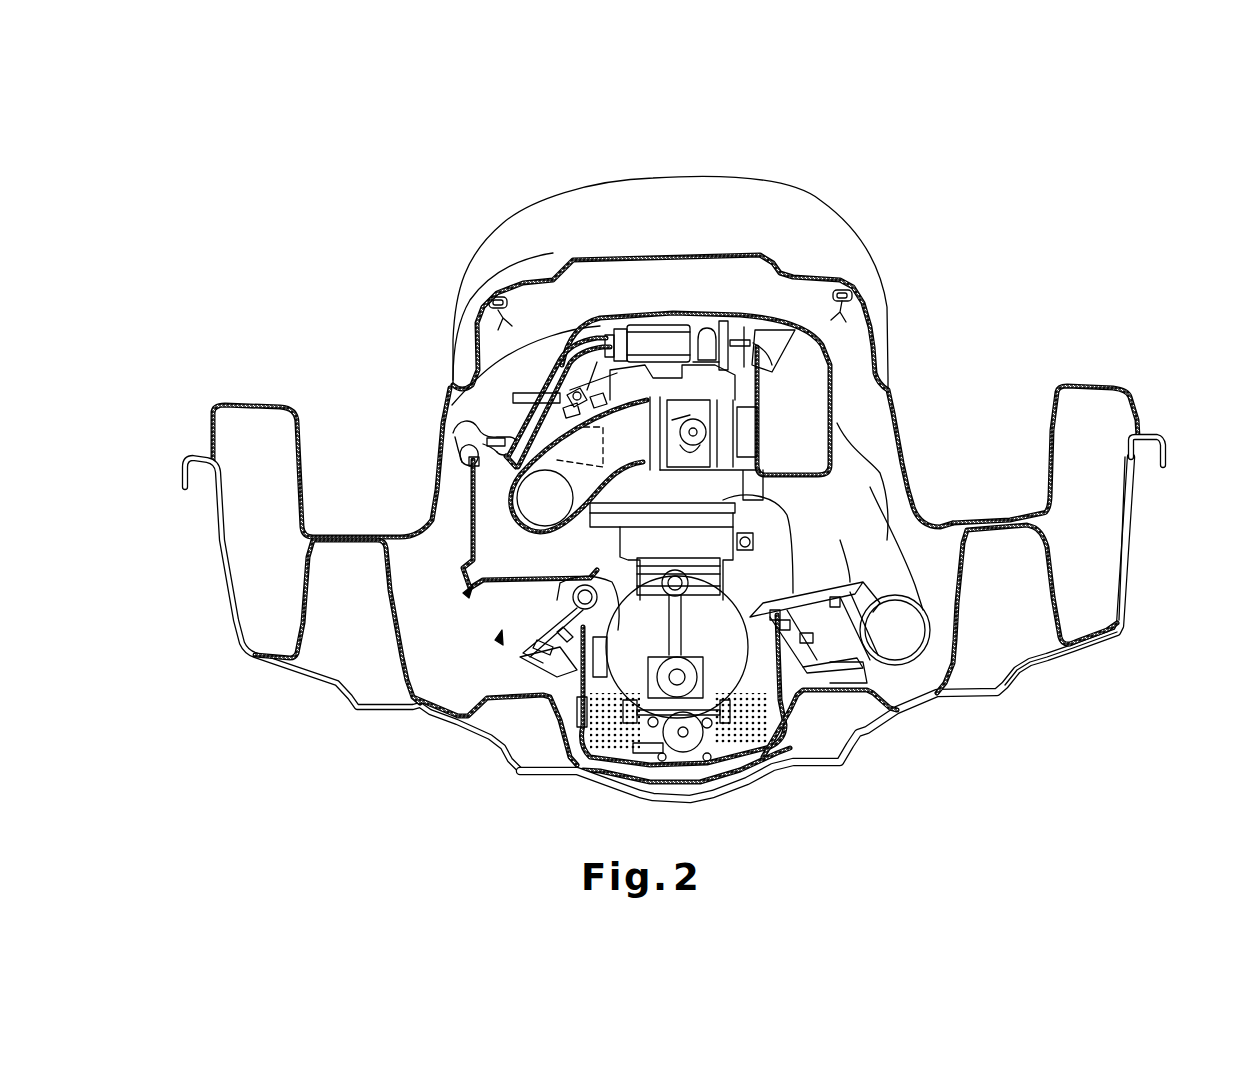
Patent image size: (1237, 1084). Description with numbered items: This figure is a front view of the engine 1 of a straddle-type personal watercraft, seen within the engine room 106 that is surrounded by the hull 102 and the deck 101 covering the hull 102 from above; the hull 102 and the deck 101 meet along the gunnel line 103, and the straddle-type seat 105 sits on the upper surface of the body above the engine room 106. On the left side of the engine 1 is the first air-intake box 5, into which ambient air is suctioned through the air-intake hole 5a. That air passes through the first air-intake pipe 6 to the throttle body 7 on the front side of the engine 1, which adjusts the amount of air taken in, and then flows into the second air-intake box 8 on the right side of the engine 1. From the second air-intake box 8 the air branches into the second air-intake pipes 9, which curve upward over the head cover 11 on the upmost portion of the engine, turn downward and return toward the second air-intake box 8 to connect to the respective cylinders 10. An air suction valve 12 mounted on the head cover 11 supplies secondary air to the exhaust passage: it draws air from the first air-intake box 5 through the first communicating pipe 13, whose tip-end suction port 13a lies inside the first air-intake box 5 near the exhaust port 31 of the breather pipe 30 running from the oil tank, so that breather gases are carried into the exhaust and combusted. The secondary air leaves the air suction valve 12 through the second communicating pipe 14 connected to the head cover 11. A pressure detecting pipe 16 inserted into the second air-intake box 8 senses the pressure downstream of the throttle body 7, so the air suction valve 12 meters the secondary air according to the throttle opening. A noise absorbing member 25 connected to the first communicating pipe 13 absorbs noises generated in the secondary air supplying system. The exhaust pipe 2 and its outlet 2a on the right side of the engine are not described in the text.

The engine 1 is at (615, 625).
The exhaust pipe 2 is at (913, 515).
The exhaust pipe outlet 2a is at (907, 623).
The first air-intake box 5 is at (473, 517).
The air-intake hole 5a is at (465, 592).
The first air-intake pipe 6 is at (560, 560).
The throttle body 7 is at (884, 380).
The second air-intake box 8 is at (880, 422).
The second air-intake pipes 9 is at (580, 300).
The cylinder 10 is at (693, 543).
The head cover 11 is at (572, 388).
The air suction valve 12 is at (703, 320).
The first communicating pipe 13 is at (453, 387).
The tip-end suction port 13a is at (467, 467).
The second communicating pipe 14 is at (707, 322).
The pressure detecting pipe 16 is at (762, 322).
The noise absorbing member 25 is at (640, 322).
The breather pipe 30 is at (506, 440).
The exhaust port 31 is at (455, 433).
The deck 101 is at (1083, 383).
The hull 102 is at (1052, 664).
The gunnel line 103 is at (1168, 452).
The seat 105 is at (680, 176).
The engine room 106 is at (497, 638).